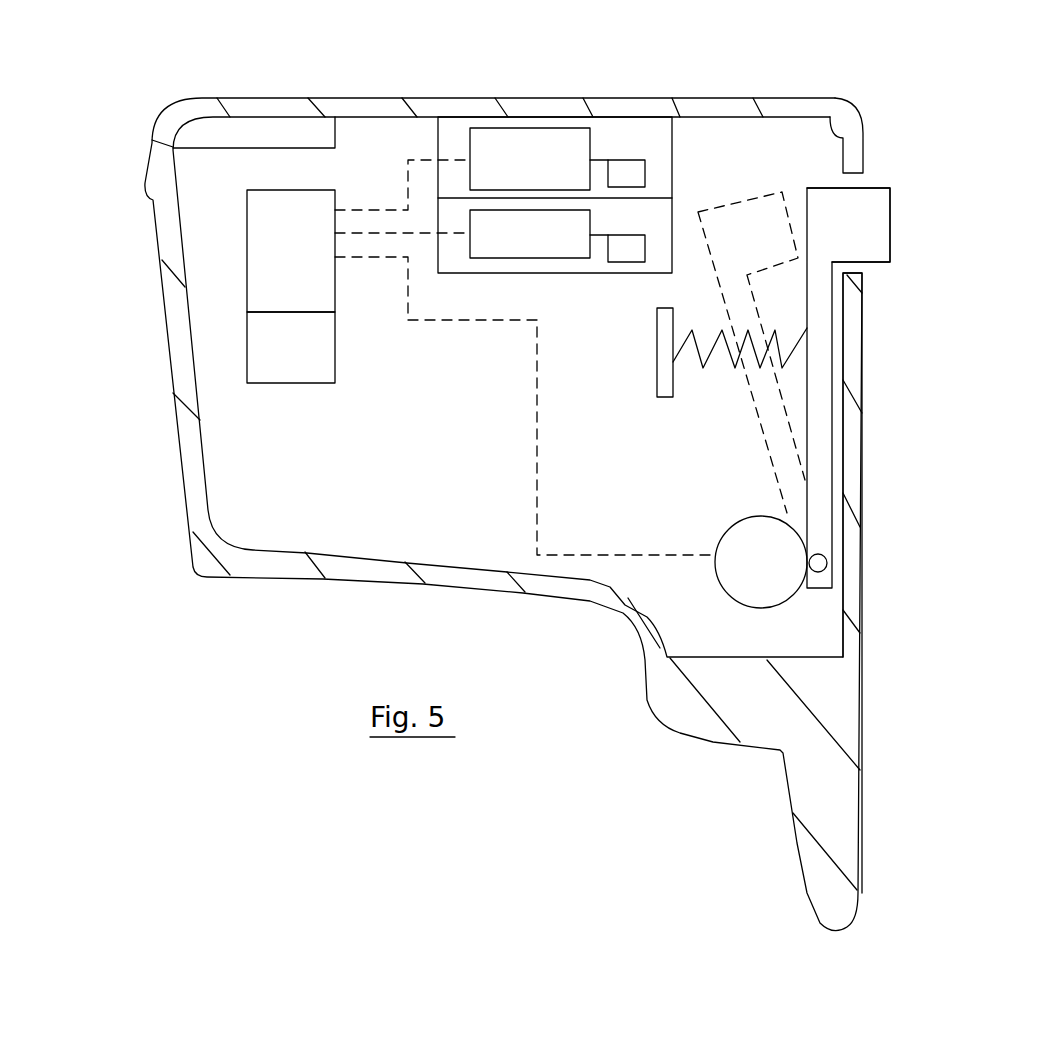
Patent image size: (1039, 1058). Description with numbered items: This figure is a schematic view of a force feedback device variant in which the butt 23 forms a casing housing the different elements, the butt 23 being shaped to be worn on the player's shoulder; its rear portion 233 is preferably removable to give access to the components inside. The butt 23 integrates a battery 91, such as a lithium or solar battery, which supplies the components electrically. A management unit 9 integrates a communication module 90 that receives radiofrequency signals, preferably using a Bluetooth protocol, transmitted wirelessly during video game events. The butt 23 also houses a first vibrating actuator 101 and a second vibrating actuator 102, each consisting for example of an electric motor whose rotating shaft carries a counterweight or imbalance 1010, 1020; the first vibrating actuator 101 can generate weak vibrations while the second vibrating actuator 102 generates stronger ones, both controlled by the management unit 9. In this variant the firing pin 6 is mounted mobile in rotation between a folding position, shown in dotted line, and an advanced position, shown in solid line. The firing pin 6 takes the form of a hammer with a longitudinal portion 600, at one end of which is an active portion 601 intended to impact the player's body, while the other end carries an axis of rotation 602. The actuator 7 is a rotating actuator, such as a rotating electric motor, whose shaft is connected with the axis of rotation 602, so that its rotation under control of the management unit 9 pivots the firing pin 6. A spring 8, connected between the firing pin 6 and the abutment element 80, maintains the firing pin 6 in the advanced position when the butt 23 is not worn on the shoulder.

The butt 23 is at (610, 103).
The rear portion 233 is at (833, 127).
The battery 91 is at (272, 128).
The management unit 9 is at (305, 255).
The communication module 90 is at (315, 356).
The first vibrating actuator 101 is at (560, 170).
The counterweight or imbalance 1010 is at (618, 175).
The second vibrating actuator 102 is at (575, 250).
The counterweight or imbalance 1020 is at (618, 250).
The firing pin 6 is at (904, 248).
The active portion 601 is at (878, 225).
The longitudinal portion 600 is at (818, 430).
The axis of rotation 602 is at (828, 563).
The abutment element 80 is at (652, 360).
The spring 8 is at (704, 388).
The actuator 7 is at (755, 515).